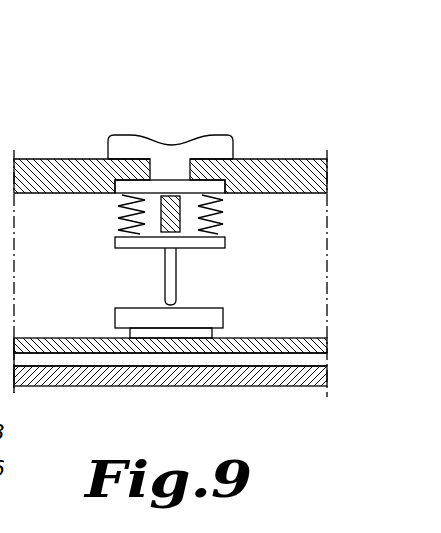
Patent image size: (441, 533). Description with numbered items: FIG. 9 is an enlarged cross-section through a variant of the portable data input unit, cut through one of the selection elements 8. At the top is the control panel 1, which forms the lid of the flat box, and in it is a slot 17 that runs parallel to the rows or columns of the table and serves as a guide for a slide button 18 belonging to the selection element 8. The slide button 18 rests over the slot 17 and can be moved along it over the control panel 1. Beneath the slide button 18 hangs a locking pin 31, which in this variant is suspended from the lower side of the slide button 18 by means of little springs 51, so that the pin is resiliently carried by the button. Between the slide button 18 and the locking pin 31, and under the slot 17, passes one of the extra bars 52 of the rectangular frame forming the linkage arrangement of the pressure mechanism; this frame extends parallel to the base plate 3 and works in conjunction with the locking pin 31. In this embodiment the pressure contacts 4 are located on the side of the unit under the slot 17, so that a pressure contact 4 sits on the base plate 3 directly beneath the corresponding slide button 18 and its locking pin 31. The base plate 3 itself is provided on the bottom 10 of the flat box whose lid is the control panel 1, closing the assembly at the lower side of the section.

The control panel 1 is at (38, 158).
The selection element 8 is at (113, 118).
The slide button 18 is at (214, 145).
The slot 17 is at (222, 175).
The extra bar 52 is at (181, 212).
The little spring 51 is at (214, 224).
The locking pin 31 is at (165, 275).
The pressure contact 4 is at (213, 318).
The base plate 3 is at (267, 347).
The bottom 10 is at (120, 387).